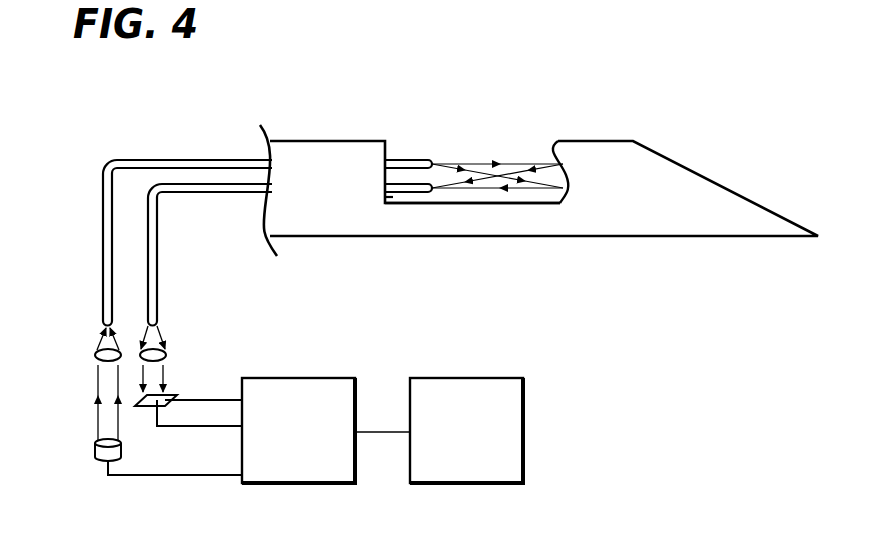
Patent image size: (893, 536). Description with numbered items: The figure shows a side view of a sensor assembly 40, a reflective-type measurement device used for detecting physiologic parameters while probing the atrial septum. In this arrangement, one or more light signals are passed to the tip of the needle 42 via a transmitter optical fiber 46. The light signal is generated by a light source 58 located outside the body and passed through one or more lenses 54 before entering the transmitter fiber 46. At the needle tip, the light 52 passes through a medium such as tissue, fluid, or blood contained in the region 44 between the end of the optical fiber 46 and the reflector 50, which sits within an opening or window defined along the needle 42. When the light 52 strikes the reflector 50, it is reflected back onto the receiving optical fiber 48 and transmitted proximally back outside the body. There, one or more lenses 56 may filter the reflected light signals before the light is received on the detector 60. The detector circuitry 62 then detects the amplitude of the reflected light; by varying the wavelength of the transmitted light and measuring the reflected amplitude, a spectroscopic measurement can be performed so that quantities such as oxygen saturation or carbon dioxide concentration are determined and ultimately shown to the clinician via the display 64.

The sensor assembly 40 is at (539, 162).
The needle 42 is at (612, 238).
The sensing cavity 44 is at (446, 110).
The transmitter optical fiber 46 is at (180, 158).
The receiving optical fiber 48 is at (177, 196).
The reflector 50 is at (547, 142).
The light 52 is at (487, 146).
The lenses 54 is at (94, 353).
The lenses 56 is at (168, 355).
The light source 58 is at (93, 446).
The detector 60 is at (170, 396).
The detector circuitry 62 is at (305, 378).
The display 64 is at (478, 378).